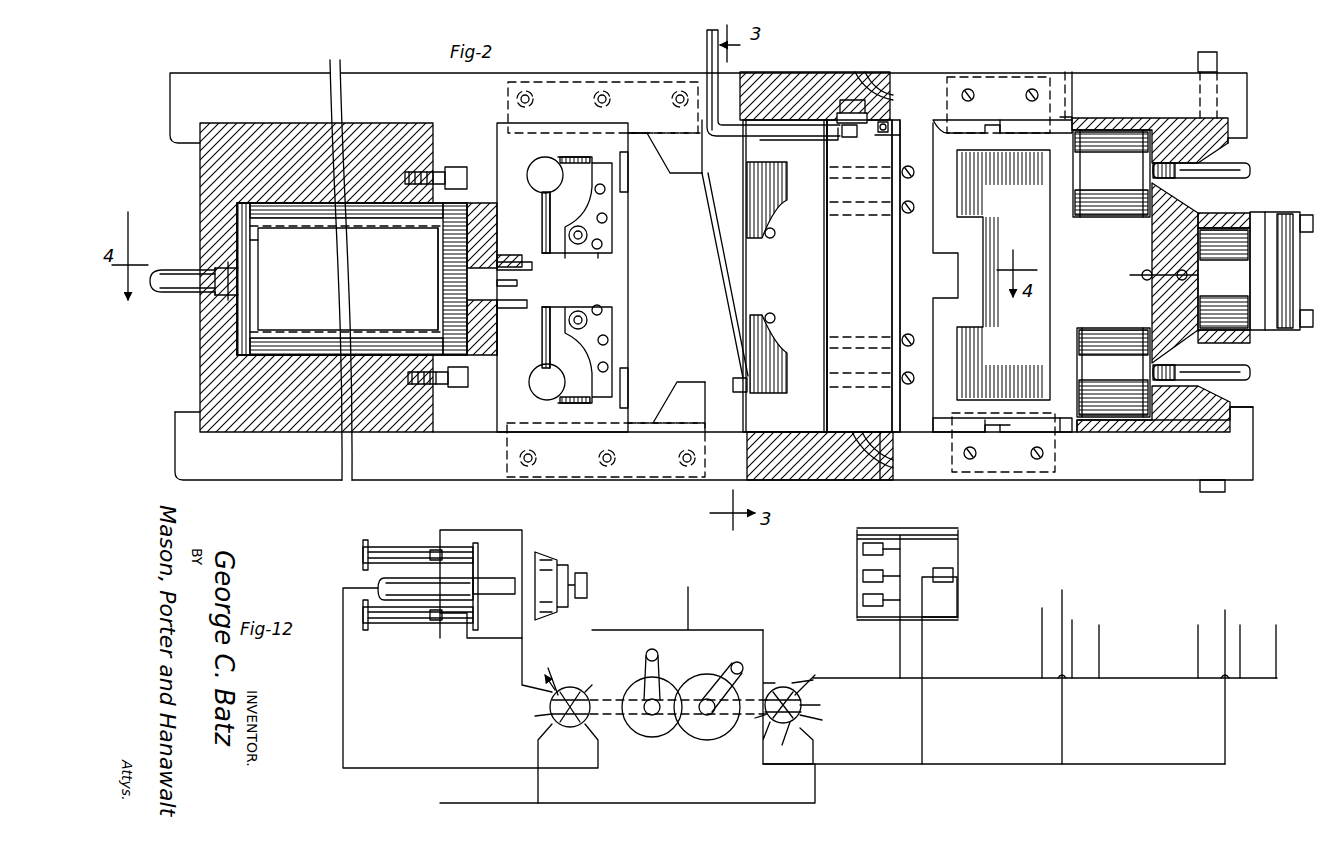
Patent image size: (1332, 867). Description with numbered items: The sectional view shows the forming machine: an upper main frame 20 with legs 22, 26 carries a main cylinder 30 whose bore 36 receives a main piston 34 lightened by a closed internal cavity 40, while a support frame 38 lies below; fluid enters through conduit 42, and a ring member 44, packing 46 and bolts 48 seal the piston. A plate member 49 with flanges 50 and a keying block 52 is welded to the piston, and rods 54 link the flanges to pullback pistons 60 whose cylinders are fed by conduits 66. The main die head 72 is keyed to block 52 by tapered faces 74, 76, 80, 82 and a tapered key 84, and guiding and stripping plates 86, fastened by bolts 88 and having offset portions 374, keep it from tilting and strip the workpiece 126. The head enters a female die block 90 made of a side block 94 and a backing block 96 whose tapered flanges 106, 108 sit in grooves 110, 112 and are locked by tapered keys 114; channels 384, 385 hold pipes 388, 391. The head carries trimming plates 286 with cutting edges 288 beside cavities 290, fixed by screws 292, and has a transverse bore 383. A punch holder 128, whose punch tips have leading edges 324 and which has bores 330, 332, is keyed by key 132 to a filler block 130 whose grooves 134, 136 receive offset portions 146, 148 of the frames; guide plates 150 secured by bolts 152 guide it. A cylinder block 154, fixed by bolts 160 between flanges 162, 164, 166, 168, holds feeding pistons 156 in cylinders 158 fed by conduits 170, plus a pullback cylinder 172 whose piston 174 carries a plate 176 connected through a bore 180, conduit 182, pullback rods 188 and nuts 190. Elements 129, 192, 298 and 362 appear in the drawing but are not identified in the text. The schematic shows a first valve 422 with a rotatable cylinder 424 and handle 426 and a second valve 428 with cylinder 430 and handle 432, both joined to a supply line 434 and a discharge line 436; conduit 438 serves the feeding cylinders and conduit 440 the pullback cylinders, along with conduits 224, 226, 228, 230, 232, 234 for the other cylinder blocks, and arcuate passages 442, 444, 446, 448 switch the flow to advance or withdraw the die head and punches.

In FIG. 2, the upper main frame 20 is at (386, 94).
In FIG. 2, the leg 22 is at (340, 66).
In FIG. 2, the leg 26 is at (1200, 70).
In FIG. 2, the main cylinder 30 is at (200, 360).
In FIG. 12, the main cylinder 30 is at (452, 638).
In FIG. 2, the main piston 34 is at (240, 300).
In FIG. 12, the main piston 34 is at (380, 598).
In FIG. 2, the cylindrical bore 36 is at (258, 203).
In FIG. 2, the support frame 38 is at (300, 480).
In FIG. 2, the closed internal cavity 40 is at (433, 278).
In FIG. 2, the conduit 42 is at (190, 264).
In FIG. 12, the conduit 42 is at (343, 690).
In FIG. 2, the ring member 44 is at (470, 200).
In FIG. 2, the packing 46 is at (400, 195).
In FIG. 2, the bolts 48 is at (458, 392).
In FIG. 2, the plate member 49 is at (450, 377).
In FIG. 12, the plate member 49 is at (465, 578).
In FIG. 12, the flanges 50 is at (486, 627).
In FIG. 2, the keying block 52 is at (524, 285).
In FIG. 12, the rods 54 is at (390, 640).
In FIG. 12, the pullback pistons 60 is at (412, 645).
In FIG. 12, the conduits 66 is at (450, 530).
In FIG. 2, the main die head 72 is at (612, 268).
In FIG. 12, the main die head 72 is at (490, 598).
In FIG. 2, the tapered face 74 is at (525, 240).
In FIG. 2, the tapered face 76 is at (505, 355).
In FIG. 2, the tapered face 80 is at (525, 267).
In FIG. 2, the tapered face 82 is at (515, 312).
In FIG. 2, the tapered key 84 is at (505, 255).
In FIG. 2, the guiding and stripping plates 86 is at (668, 396).
In FIG. 2, the bolts 88 is at (625, 500).
In FIG. 2, the female die block 90 is at (775, 130).
In FIG. 12, the female die block 90 is at (555, 560).
In FIG. 2, the side block 94 is at (820, 305).
In FIG. 2, the backing block 96 is at (825, 262).
In FIG. 2, the tapered flange 106 is at (885, 72).
In FIG. 2, the tapered flange 108 is at (865, 480).
In FIG. 2, the groove 110 is at (858, 100).
In FIG. 2, the groove 112 is at (885, 478).
In FIG. 2, the tapered keys 114 is at (862, 455).
In FIG. 2, the blank workpiece 126 is at (720, 244).
In FIG. 2, the punch holder 128 is at (895, 262).
In FIG. 2, the pad 129 is at (730, 388).
In FIG. 2, the filler block 130 is at (985, 345).
In FIG. 2, the key 132 is at (940, 240).
In FIG. 2, the groove 134 is at (975, 120).
In FIG. 2, the groove 136 is at (1068, 100).
In FIG. 2, the offset portion 146 is at (1000, 120).
In FIG. 2, the offset portion 148 is at (988, 420).
In FIG. 2, the guide plates 150 is at (1075, 495).
In FIG. 2, the bolts 152 is at (1030, 492).
In FIG. 2, the cylinder block 154 is at (1150, 121).
In FIG. 2, the feeding pistons 156 is at (1080, 160).
In FIG. 12, the feeding pistons 156 is at (860, 600).
In FIG. 2, the cylinders 158 is at (1075, 332).
In FIG. 2, the bolts 160 is at (1185, 500).
In FIG. 2, the flange 162 is at (1240, 128).
In FIG. 2, the flange 164 is at (1072, 117).
In FIG. 2, the end flange 166 is at (1253, 415).
In FIG. 2, the flange 168 is at (1085, 432).
In FIG. 2, the conduits 170 is at (1240, 392).
In FIG. 12, the conduits 170 is at (875, 625).
In FIG. 2, the pullback cylinder 172 is at (1200, 218).
In FIG. 2, the pullback piston 174 is at (1200, 330).
In FIG. 12, the pullback piston 174 is at (953, 572).
In FIG. 2, the plate 176 is at (1285, 212).
In FIG. 12, the plate 176 is at (957, 597).
In FIG. 2, the bore 180 is at (1200, 248).
In FIG. 12, the conduit 182 is at (922, 640).
In FIG. 2, the pullback rods 188 is at (1275, 360).
In FIG. 12, the pullback rods 188 is at (935, 632).
In FIG. 2, the nuts 190 is at (1000, 445).
In FIG. 2, the pin 192 is at (1062, 432).
In FIG. 12, the conduits 224 is at (1110, 636).
In FIG. 12, the conduits 226 is at (1276, 660).
In FIG. 12, the conduit 228 is at (1072, 625).
In FIG. 12, the conduit 230 is at (1240, 640).
In FIG. 12, the conduit 232 is at (1077, 675).
In FIG. 12, the conduit 234 is at (1225, 612).
In FIG. 2, the trimming plates 286 is at (575, 258).
In FIG. 2, the curvilinear cutting edges 288 is at (577, 208).
In FIG. 2, the cavities 290 is at (545, 195).
In FIG. 2, the screws 292 is at (645, 330).
In FIG. 2, the pivot 298 is at (597, 230).
In FIG. 2, the sharp leading edges 324 is at (810, 378).
In FIG. 2, the bore 330 is at (912, 214).
In FIG. 2, the bore 332 is at (920, 322).
In FIG. 2, the latch 362 is at (540, 157).
In FIG. 2, the offset portions 374 is at (672, 365).
In FIG. 2, the transverse bore 383 is at (545, 400).
In FIG. 2, the channels 384 is at (905, 145).
In FIG. 2, the channels 385 is at (859, 143).
In FIG. 2, the pipe 388 is at (907, 132).
In FIG. 2, the pipe 391 is at (815, 150).
In FIG. 12, the first valve 422 is at (546, 675).
In FIG. 12, the rotatable cylinder 424 is at (532, 716).
In FIG. 12, the handle 426 is at (648, 678).
In FIG. 12, the second valve 428 is at (780, 688).
In FIG. 12, the rotatable cylinder 430 is at (829, 721).
In FIG. 12, the handle 432 is at (720, 675).
In FIG. 12, the supply line 434 is at (690, 600).
In FIG. 12, the discharge line 436 is at (458, 808).
In FIG. 12, the conduit 438 is at (855, 678).
In FIG. 12, the conduit 440 is at (855, 764).
In FIG. 12, the arcuate passage 442 is at (549, 680).
In FIG. 12, the arcuate passage 444 is at (605, 740).
In FIG. 12, the arcuate passage 446 is at (776, 733).
In FIG. 12, the arcuate passage 448 is at (825, 687).